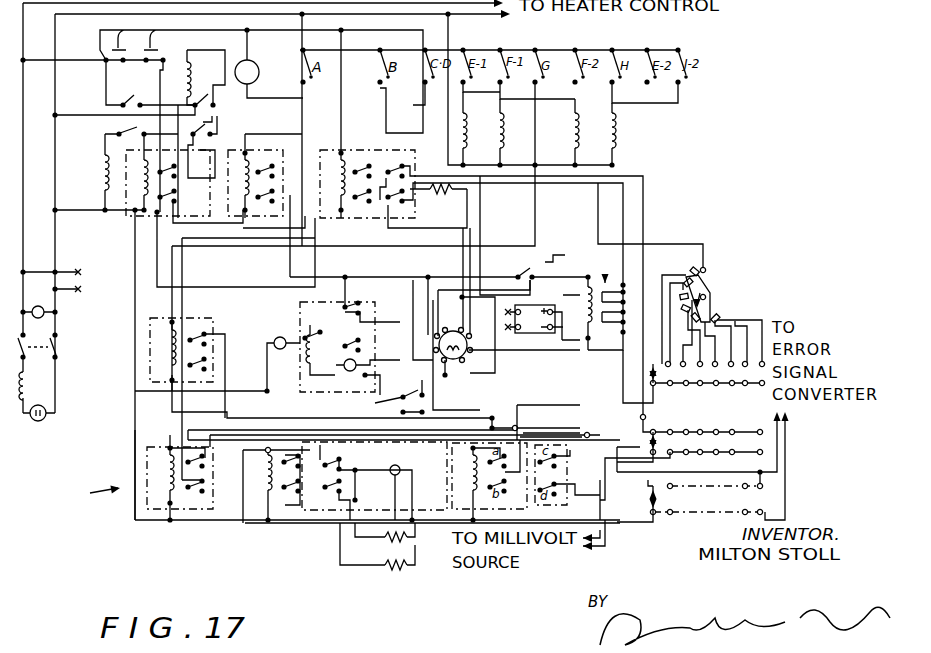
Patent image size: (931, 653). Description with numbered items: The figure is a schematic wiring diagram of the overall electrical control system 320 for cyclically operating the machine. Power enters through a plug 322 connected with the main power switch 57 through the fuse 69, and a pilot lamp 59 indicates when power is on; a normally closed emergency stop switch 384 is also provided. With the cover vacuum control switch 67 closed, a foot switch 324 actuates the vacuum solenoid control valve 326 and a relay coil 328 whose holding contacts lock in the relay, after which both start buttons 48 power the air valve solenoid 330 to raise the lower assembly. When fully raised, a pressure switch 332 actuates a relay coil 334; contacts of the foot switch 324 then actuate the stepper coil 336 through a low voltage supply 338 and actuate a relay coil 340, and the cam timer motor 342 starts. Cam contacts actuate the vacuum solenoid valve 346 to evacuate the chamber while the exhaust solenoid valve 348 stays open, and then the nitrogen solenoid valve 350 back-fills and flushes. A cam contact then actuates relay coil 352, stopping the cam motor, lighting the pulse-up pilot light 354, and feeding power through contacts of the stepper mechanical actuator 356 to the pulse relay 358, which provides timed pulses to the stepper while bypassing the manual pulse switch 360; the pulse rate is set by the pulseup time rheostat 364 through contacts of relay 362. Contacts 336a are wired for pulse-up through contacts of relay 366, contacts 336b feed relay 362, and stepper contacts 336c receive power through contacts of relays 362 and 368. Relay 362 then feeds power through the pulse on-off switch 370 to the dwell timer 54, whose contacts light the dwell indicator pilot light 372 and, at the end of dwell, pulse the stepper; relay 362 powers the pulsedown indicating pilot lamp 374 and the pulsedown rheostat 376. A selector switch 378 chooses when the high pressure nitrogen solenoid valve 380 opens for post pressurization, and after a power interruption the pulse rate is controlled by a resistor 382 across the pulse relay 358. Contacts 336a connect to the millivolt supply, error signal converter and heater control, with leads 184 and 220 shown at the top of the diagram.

The start buttons 48 is at (136, 28).
The emergency stop switch 384 is at (150, 136).
The cover vacuum control switch 67 is at (112, 130).
The vacuum solenoid control valve 326 is at (100, 178).
The relay coil 328 is at (128, 220).
The air valve solenoid 330 is at (202, 133).
The pressure switch 332 is at (210, 92).
The foot switch 324 is at (214, 126).
The relay coil 334 is at (286, 138).
The cam timer motor 342 is at (259, 70).
The relay coil 340 is at (410, 158).
The resistor 382 is at (440, 194).
The exhaust solenoid valve 348 is at (467, 125).
The nitrogen solenoid valve 350 is at (518, 118).
The high pressure nitrogen solenoid valve 380 is at (571, 135).
The vacuum solenoid valve 346 is at (618, 135).
The pilot lamp 59 is at (44, 309).
The main power switch 57 is at (57, 340).
The fuse 69 is at (34, 385).
The plug 322 is at (40, 421).
The relay coil 352 is at (222, 310).
The dwell indicator pilot light 372 is at (276, 322).
The dwell timer 54 is at (296, 310).
The pulse on-off switch 370 is at (395, 404).
The pulse relay 358 is at (455, 360).
The manual pulse switch 360 is at (553, 263).
The low voltage supply 338 is at (535, 325).
The stepper coil 336 is at (586, 300).
The stepper mechanical actuator 356 is at (606, 299).
The selector switch 378 is at (722, 288).
The stepper contacts 336c is at (707, 373).
The stepper contacts 336b is at (684, 449).
The relay contacts 336a is at (690, 501).
The pulse-up indicating pilot light 354 is at (592, 432).
The relay 368 is at (147, 466).
The electrical control system 320 is at (93, 475).
The relay 362 is at (245, 500).
The relay 366 is at (440, 512).
The pulsedown indicating pilot lamp 374 is at (403, 456).
The pulseup time rheostat 364 is at (412, 535).
The pulsedown rheostat 376 is at (380, 567).
The lead 184 is at (800, 21).
The lead 220 is at (855, 5).